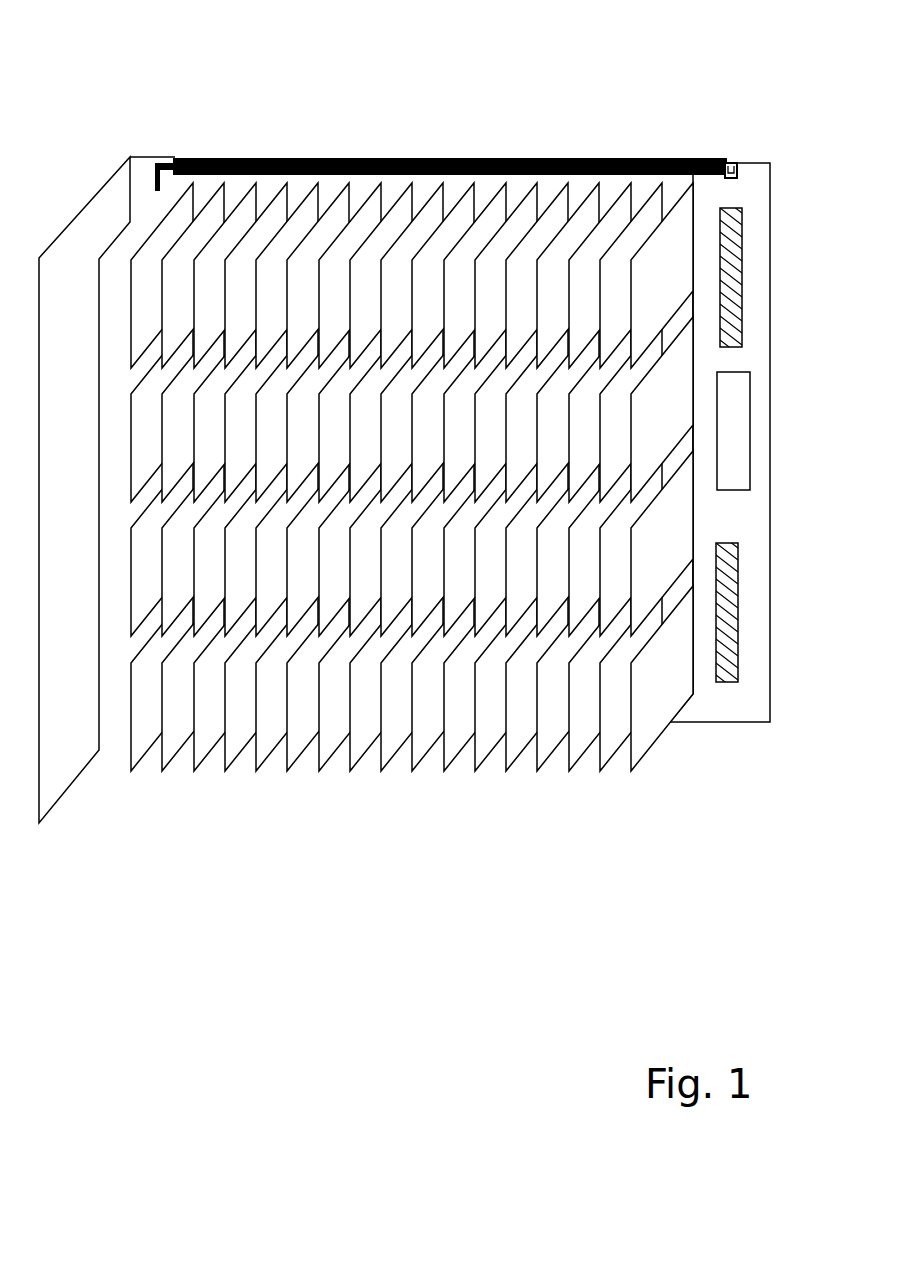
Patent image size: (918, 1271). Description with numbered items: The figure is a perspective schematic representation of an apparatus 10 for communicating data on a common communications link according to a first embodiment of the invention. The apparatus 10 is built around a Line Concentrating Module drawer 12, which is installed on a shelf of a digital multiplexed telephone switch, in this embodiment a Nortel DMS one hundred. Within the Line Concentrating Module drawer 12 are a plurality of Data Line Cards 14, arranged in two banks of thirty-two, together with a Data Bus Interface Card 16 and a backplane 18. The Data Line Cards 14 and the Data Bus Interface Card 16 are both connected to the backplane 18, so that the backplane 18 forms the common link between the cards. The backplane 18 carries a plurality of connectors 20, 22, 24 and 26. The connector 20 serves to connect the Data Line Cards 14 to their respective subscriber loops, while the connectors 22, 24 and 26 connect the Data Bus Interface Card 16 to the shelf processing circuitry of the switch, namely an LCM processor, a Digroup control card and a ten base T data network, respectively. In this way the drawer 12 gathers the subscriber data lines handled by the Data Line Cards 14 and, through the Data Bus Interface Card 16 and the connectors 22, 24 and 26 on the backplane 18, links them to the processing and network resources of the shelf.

The apparatus for communicating data on a common communications link 10 is at (533, 67).
The Line Concentrating Module drawer 12 is at (340, 150).
The Data Line Cards 14 is at (268, 278).
The Data Bus Interface Card 16 is at (108, 733).
The backplane 18 is at (205, 192).
The connector 20 is at (726, 672).
The connector 22 is at (733, 207).
The connector 24 is at (727, 162).
The connector 26 is at (748, 489).